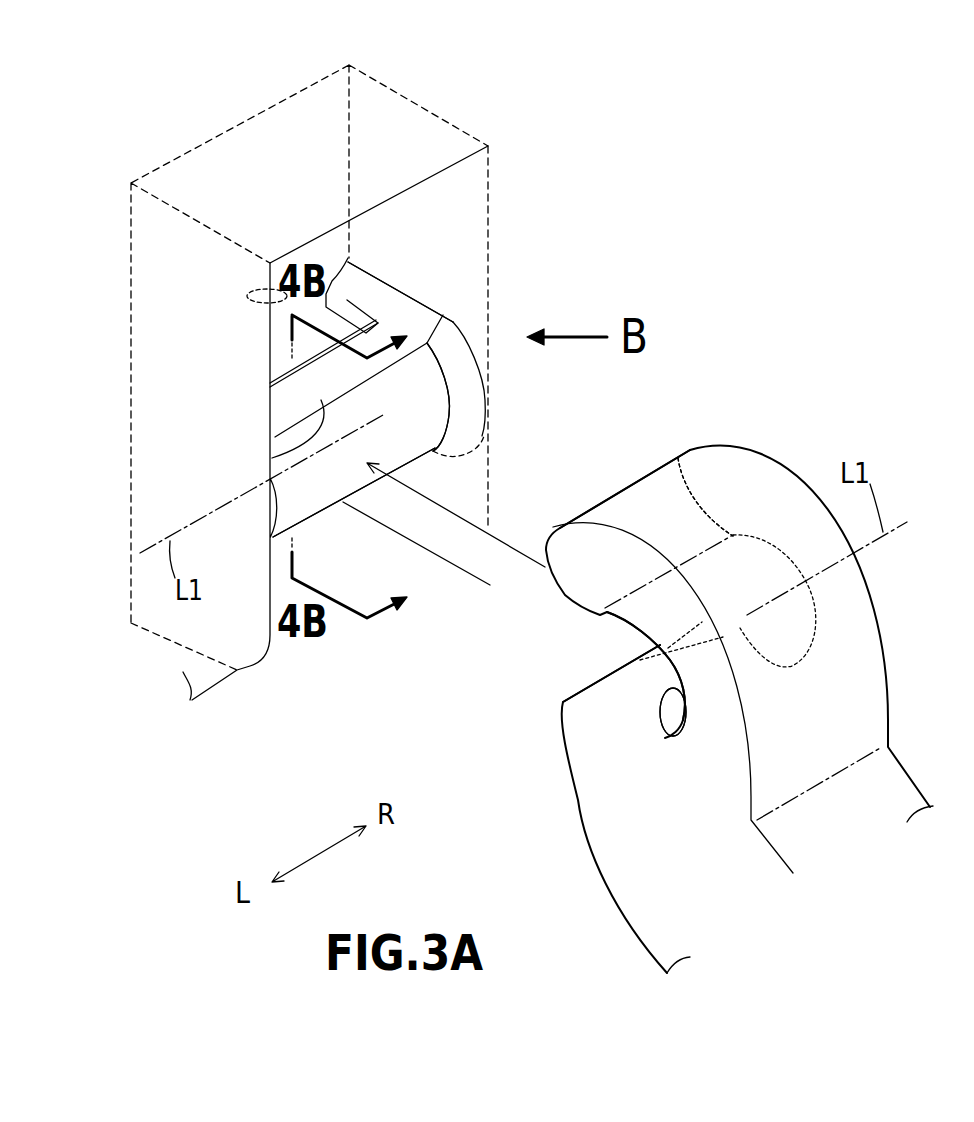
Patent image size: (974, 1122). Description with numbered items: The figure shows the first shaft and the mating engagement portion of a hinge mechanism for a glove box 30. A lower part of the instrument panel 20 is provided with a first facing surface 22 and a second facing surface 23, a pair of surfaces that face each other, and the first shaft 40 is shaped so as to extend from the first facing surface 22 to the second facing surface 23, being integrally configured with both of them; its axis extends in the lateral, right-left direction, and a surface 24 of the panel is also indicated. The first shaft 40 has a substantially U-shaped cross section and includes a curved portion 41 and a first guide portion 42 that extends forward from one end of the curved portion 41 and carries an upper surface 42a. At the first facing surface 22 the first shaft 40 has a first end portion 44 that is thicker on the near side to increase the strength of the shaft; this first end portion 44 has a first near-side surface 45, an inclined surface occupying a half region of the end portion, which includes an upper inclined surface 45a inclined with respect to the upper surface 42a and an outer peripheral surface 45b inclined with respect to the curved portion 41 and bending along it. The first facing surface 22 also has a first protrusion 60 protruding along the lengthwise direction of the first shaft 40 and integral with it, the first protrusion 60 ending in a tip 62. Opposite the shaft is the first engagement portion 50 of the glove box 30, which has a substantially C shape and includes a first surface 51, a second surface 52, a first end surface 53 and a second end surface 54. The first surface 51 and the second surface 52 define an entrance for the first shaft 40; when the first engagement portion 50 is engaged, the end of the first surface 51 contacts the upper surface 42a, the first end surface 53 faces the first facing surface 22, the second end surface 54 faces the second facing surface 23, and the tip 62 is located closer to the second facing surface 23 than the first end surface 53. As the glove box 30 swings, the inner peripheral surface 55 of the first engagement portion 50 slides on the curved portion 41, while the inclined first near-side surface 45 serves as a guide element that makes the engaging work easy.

The instrument panel 20 is at (538, 114).
The first facing surface 22 is at (463, 173).
The second facing surface 23 is at (276, 303).
The side surface 24 is at (430, 237).
The glove box 30 is at (680, 709).
The first shaft 40 is at (345, 498).
The curved portion 41 is at (312, 512).
The first guide portion 42 is at (320, 394).
The upper surface 42a is at (270, 458).
The first end portion 44 is at (481, 321).
The first near-side surface 45 is at (485, 423).
The upper inclined surface 45a is at (433, 316).
The outer peripheral surface 45b is at (475, 404).
The first engagement portion 50 is at (612, 815).
The first surface 51 is at (610, 614).
The second surface 52 is at (602, 692).
The first end surface 53 is at (743, 482).
The second end surface 54 is at (580, 567).
The inner peripheral surface 55 is at (670, 731).
The first protrusion 60 is at (379, 288).
The tip 62 is at (343, 313).